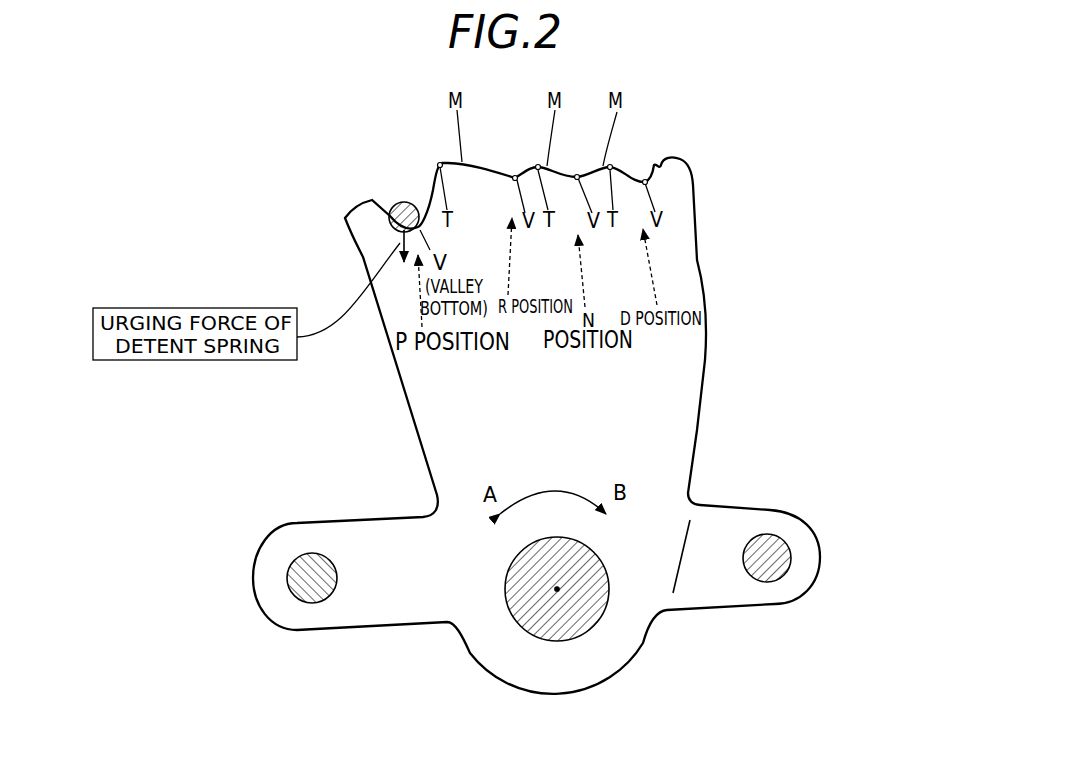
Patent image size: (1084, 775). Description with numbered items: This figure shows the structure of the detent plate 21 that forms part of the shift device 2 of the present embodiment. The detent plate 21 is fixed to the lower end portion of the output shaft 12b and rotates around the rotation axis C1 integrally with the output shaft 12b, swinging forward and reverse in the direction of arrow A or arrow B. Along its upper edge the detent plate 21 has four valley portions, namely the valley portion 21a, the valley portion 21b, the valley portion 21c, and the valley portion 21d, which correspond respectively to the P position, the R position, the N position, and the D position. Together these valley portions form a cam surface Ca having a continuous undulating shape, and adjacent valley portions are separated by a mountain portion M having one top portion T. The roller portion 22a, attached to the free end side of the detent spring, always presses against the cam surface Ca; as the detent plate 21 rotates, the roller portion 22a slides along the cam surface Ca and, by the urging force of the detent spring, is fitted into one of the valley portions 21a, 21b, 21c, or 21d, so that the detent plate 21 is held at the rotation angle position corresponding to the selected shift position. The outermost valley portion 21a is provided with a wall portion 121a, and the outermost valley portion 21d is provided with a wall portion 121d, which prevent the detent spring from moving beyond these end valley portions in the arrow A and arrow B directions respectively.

The shift device 2 is at (805, 155).
The detent plate 21 is at (688, 228).
The valley portion 21a is at (390, 183).
The valley portion 21b is at (512, 167).
The valley portion 21c is at (575, 168).
The valley portion 21d is at (638, 168).
The wall portion 121a is at (378, 203).
The wall portion 121d is at (657, 167).
The roller portion 22a is at (393, 220).
The output shaft 12b is at (593, 603).
The rotation axis C1 is at (557, 589).
The cam surface Ca is at (482, 165).